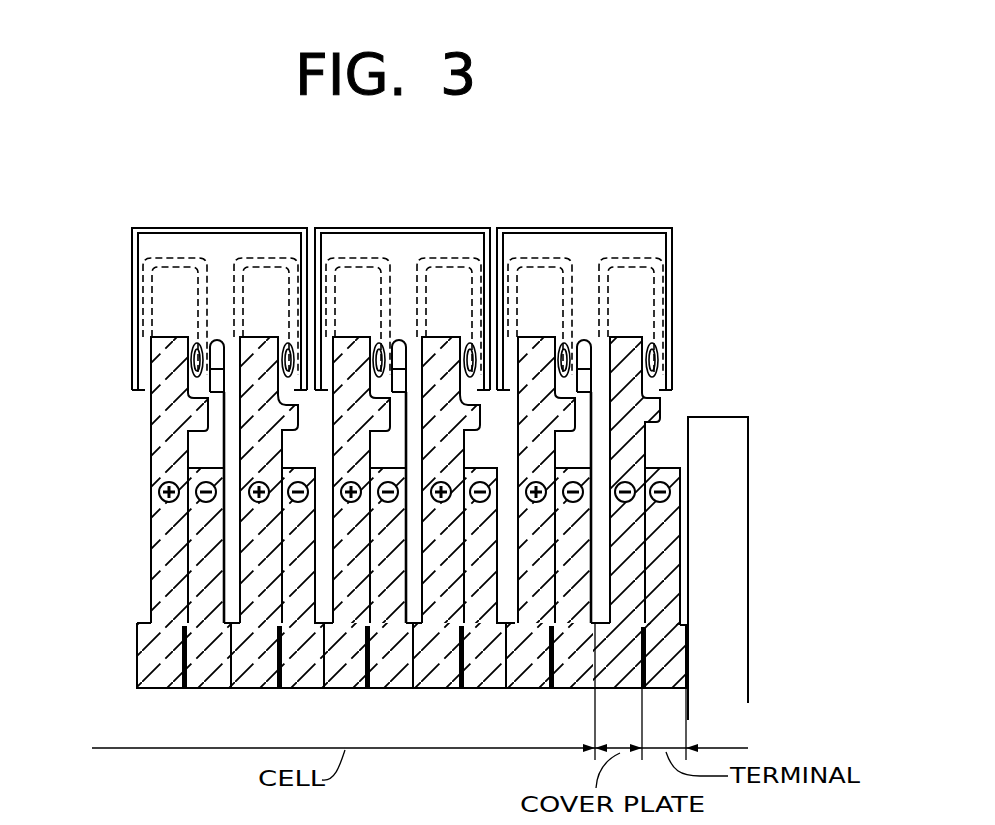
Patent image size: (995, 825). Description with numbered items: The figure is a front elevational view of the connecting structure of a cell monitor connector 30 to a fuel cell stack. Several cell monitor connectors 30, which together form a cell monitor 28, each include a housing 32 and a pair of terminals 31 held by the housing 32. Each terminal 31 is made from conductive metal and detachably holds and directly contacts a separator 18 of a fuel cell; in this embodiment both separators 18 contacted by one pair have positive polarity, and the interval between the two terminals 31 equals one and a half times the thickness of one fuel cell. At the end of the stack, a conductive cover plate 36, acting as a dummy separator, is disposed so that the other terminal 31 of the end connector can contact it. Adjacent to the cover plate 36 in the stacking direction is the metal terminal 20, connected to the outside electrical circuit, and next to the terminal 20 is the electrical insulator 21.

The separator 18 is at (165, 657).
The terminal 20 is at (667, 656).
The electrical insulator 21 is at (735, 488).
The cell monitor 28 is at (673, 288).
The cell monitor connector 30 is at (135, 228).
The terminal 31 is at (288, 343).
The housing 32 is at (128, 298).
The cover plate 36 is at (627, 582).